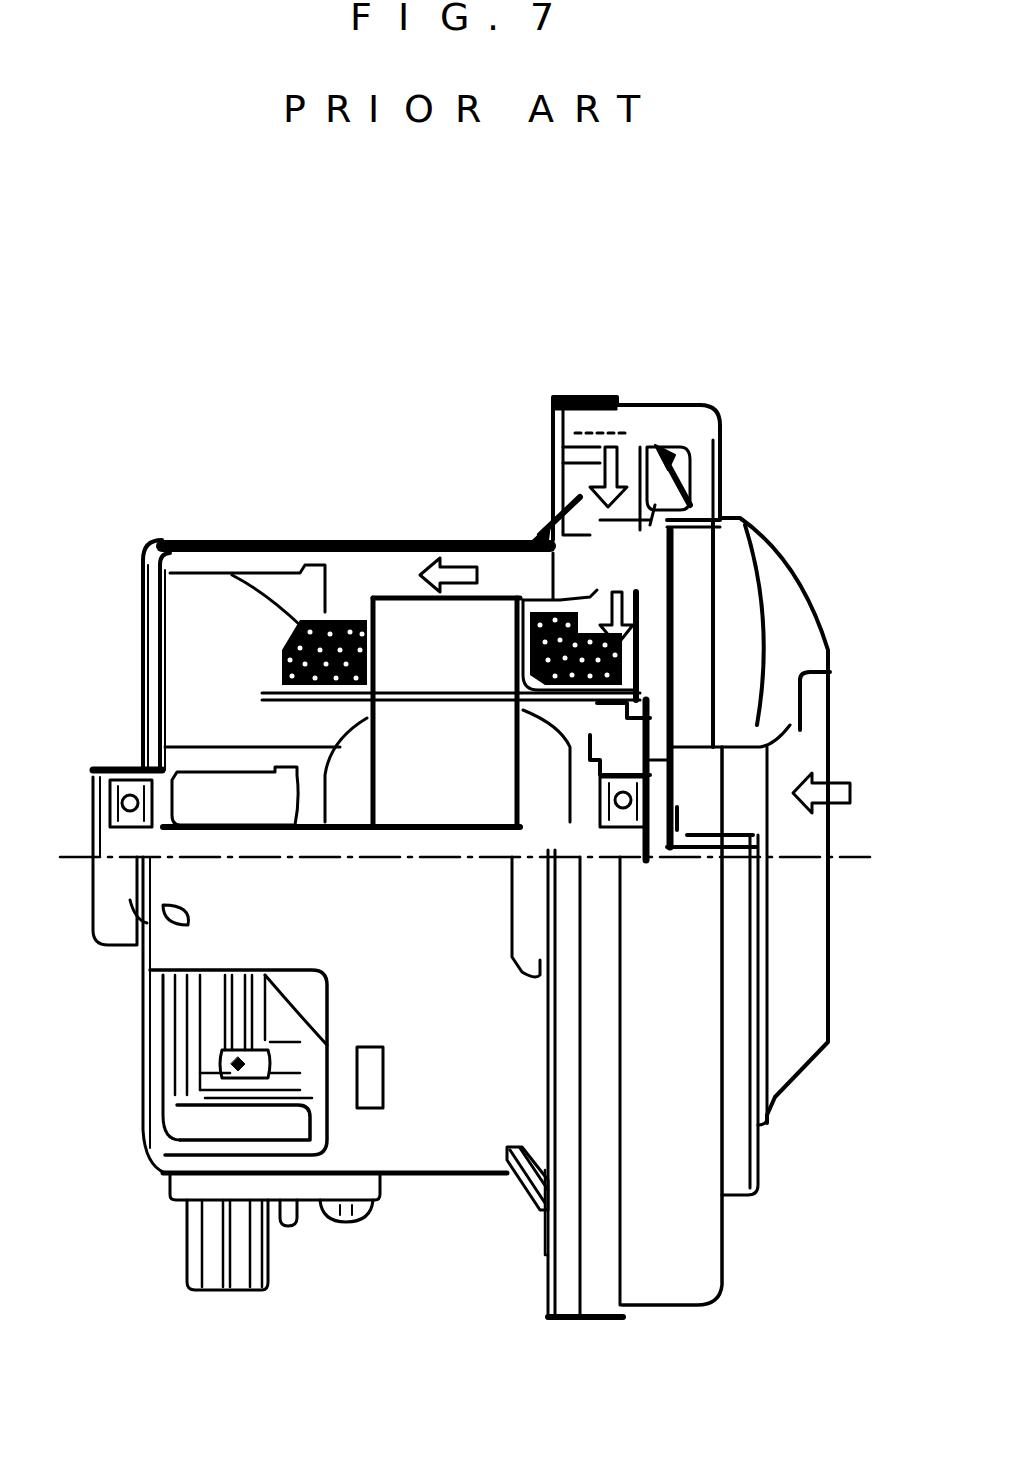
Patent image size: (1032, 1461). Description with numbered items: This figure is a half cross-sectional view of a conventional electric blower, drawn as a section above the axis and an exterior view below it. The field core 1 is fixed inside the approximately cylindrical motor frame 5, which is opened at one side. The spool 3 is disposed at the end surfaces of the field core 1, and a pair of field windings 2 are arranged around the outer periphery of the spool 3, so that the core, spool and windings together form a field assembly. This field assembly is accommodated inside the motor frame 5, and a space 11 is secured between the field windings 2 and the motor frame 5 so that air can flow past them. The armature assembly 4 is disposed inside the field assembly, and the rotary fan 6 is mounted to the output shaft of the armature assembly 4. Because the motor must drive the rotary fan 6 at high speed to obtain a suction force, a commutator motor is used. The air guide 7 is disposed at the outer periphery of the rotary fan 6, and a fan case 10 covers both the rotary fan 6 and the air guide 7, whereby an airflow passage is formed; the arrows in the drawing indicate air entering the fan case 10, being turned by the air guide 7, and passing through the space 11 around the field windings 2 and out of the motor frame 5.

The field core 1 is at (370, 555).
The field winding 2 is at (290, 625).
The spool 3 is at (550, 545).
The armature assembly 4 is at (455, 545).
The motor frame 5 is at (445, 770).
The rotary fan 6 is at (693, 560).
The air guide 7 is at (665, 425).
The fan case 10 is at (583, 400).
The space 11 is at (408, 628).